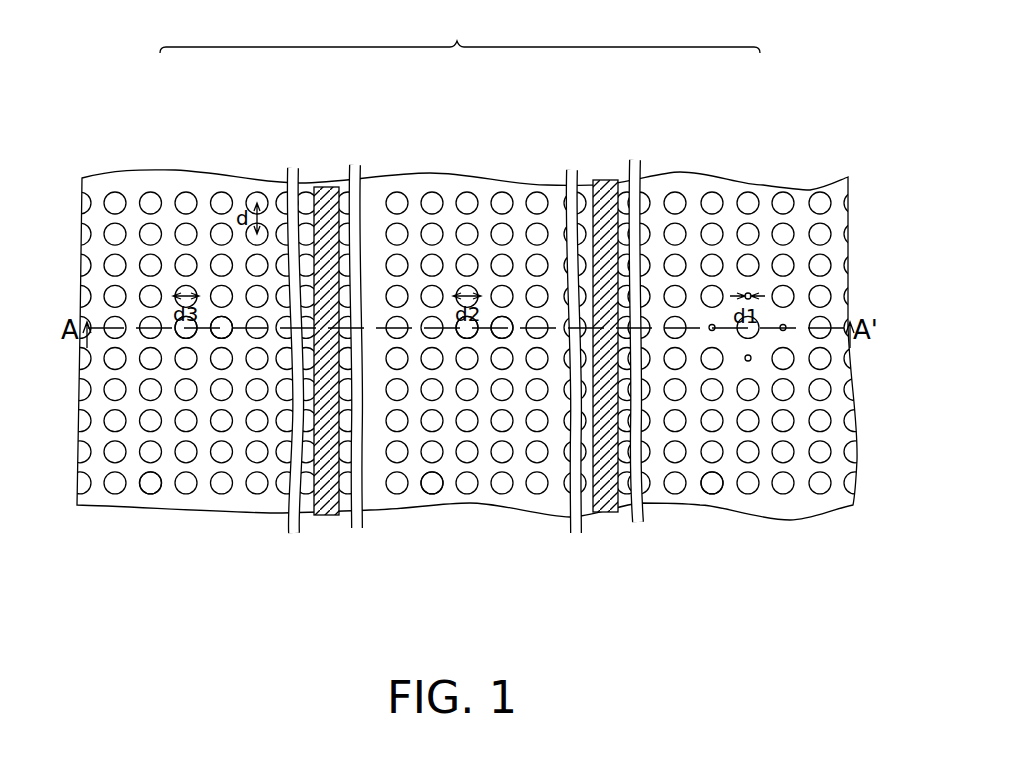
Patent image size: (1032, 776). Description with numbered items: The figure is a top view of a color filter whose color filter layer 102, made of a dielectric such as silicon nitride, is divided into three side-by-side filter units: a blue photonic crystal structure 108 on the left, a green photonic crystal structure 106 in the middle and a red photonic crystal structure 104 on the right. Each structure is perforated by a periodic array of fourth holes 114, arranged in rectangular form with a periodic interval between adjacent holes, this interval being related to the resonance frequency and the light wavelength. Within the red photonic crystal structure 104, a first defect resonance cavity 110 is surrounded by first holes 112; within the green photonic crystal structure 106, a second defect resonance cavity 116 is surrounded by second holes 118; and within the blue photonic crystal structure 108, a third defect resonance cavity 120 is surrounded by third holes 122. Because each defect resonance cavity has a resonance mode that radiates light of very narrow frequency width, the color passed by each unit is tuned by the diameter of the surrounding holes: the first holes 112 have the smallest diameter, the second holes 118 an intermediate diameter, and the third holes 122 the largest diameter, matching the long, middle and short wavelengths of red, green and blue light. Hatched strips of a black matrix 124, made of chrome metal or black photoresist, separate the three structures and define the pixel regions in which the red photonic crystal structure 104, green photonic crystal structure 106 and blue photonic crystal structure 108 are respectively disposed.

The color filter layer 102 is at (460, 30).
The red photonic crystal structure 104 is at (753, 152).
The green photonic crystal structure 106 is at (457, 152).
The blue photonic crystal structure 108 is at (187, 152).
The first defect resonance cavity 110 is at (740, 344).
The first holes 112 is at (779, 341).
The fourth holes 114 is at (140, 492).
The second defect resonance cavity 116 is at (456, 342).
The second holes 118 is at (498, 344).
The third defect resonance cavity 120 is at (170, 342).
The third holes 122 is at (219, 344).
The black matrix 124 is at (324, 513).